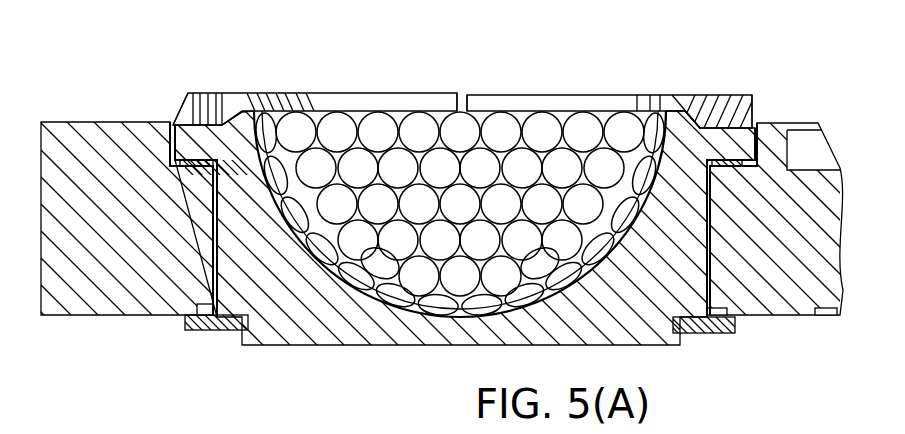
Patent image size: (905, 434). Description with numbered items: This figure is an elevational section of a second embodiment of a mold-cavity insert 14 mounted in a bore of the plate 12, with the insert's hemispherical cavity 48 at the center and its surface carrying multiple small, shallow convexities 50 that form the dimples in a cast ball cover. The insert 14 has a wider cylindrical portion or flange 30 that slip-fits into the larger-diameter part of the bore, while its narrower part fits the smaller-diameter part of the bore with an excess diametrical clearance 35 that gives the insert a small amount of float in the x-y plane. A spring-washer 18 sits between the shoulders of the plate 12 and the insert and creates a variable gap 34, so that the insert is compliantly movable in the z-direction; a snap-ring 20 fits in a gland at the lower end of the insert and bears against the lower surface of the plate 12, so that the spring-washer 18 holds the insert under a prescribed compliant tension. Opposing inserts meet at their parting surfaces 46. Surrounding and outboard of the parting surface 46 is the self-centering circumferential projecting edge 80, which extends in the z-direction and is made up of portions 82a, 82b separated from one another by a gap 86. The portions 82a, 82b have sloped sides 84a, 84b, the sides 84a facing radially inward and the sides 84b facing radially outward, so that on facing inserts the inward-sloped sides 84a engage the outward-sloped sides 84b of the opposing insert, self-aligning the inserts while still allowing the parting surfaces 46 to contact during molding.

The plate 12 is at (75, 315).
The mold-cavity insert 14 is at (425, 349).
The spring-washer 18 is at (173, 165).
The snap-ring 20 is at (217, 330).
The flange 30 is at (172, 145).
The variable gap 34 is at (727, 165).
The excess diametrical clearance 35 is at (213, 277).
The parting surface 46 is at (246, 100).
The hemispherical cavity 48 is at (553, 150).
The convexities 50 is at (418, 125).
The circumferential projecting edge 80 is at (464, 73).
The portion of projecting edge 82a is at (220, 93).
The portion of projecting edge 82b is at (327, 93).
The inward-sloped side 84a is at (180, 110).
The outward-sloped side 84b is at (358, 105).
The gap 86 is at (462, 100).